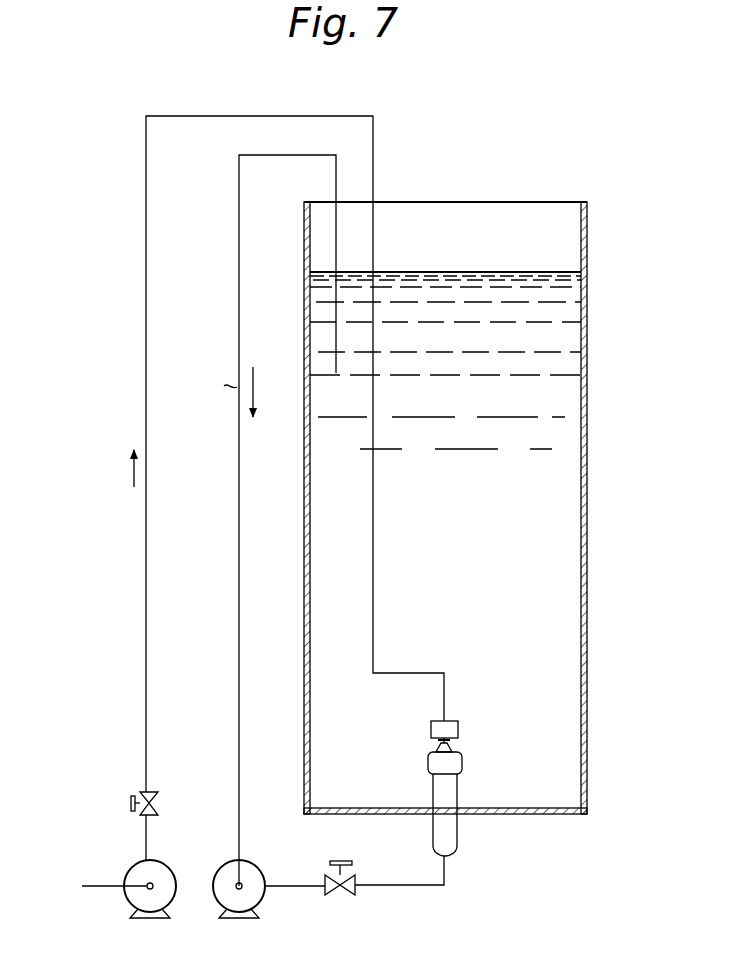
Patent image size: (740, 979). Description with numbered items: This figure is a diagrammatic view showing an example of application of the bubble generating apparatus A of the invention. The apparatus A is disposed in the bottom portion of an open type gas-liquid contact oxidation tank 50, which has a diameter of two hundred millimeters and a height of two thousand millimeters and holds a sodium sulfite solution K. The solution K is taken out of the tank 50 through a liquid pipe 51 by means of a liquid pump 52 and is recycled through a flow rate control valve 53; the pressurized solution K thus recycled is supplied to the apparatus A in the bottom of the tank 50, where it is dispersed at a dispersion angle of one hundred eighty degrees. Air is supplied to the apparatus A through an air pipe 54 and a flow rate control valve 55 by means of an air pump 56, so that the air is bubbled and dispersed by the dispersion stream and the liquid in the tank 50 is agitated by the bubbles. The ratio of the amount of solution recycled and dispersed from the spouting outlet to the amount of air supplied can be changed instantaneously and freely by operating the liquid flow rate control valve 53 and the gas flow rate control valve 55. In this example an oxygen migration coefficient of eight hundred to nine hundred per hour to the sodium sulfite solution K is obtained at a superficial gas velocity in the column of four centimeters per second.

The gas-liquid contact oxidation tank 50 is at (472, 508).
The liquid pipe 51 is at (237, 546).
The liquid pump 52 is at (248, 871).
The flow rate control valve 53 is at (338, 861).
The air pipe 54 is at (146, 583).
The flow rate control valve 55 is at (133, 800).
The air pump 56 is at (161, 871).
The bubble generating apparatus A is at (459, 786).
The sodium sulfite solution K is at (462, 408).